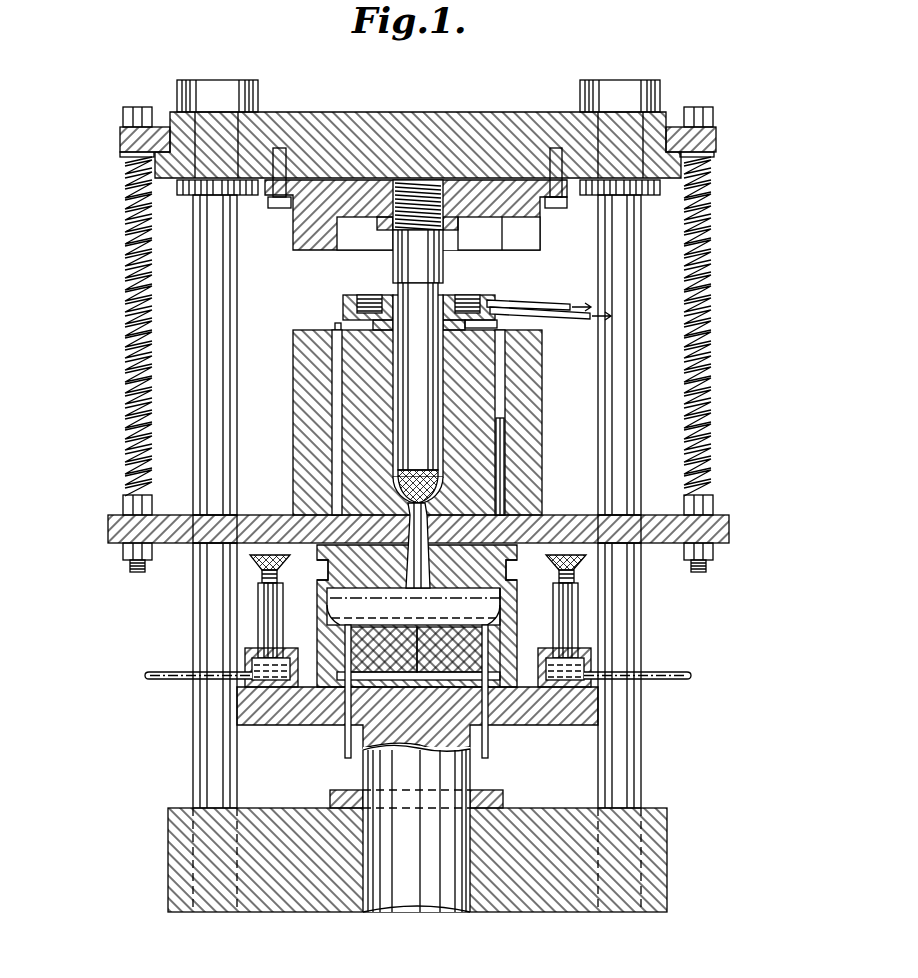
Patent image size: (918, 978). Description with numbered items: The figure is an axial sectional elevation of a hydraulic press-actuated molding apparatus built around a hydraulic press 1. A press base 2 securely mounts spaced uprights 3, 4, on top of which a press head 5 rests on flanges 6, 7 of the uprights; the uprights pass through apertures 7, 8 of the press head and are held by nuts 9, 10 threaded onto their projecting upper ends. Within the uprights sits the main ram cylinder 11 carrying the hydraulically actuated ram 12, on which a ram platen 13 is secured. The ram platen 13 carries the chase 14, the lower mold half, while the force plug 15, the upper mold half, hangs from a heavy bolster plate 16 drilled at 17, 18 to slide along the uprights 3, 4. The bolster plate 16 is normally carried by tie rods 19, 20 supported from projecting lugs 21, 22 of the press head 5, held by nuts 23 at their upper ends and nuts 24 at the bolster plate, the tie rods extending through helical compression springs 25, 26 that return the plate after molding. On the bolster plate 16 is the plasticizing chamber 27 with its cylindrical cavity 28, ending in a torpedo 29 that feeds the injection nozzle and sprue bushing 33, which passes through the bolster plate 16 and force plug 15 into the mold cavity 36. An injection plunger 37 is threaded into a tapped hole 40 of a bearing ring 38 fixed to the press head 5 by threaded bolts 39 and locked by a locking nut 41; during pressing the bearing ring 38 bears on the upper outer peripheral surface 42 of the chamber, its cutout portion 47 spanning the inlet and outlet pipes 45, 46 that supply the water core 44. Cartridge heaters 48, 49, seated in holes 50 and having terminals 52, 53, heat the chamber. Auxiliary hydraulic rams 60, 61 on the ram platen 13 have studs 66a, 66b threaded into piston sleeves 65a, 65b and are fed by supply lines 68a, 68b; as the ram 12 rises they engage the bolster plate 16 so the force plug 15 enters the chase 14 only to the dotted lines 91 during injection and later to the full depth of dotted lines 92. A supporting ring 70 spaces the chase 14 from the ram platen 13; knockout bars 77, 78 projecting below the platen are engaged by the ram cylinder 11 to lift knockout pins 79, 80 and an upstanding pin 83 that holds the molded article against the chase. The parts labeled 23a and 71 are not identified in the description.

The hydraulic press 1 is at (420, 513).
The press base 2 is at (667, 840).
The upright 3 is at (641, 728).
The upright 4 is at (193, 712).
The press head 5 is at (358, 112).
The flange 6 is at (183, 196).
The flange 7 is at (235, 138).
The aperture 8 is at (640, 135).
The nut 9 is at (258, 94).
The nut 10 is at (580, 92).
The main ram cylinder 11 is at (503, 795).
The ram 12 is at (418, 905).
The ram platen 13 is at (530, 725).
The chase 14 is at (320, 626).
The force plug 15 is at (510, 568).
The bolster plate 16 is at (590, 516).
The drilled hole 17 is at (235, 520).
The drilled hole 18 is at (641, 518).
The tie rod 19 is at (135, 572).
The tie rod 20 is at (700, 572).
The lug 21 is at (120, 142).
The lug 22 is at (716, 142).
The nut 23 is at (125, 110).
The lower nuts 23a is at (125, 552).
The nut 24 is at (125, 500).
The helical compression spring 25 is at (125, 420).
The helical compression spring 26 is at (712, 382).
The plasticizing chamber 27 is at (293, 388).
The cylindrical cavity 28 is at (443, 296).
The torpedo 29 is at (412, 473).
The injection nozzle and sprue bushing 33 is at (430, 530).
The mold cavity 36 is at (501, 590).
The injection plunger 37 is at (396, 272).
The bearing ring 38 is at (295, 250).
The threaded bolts 39 is at (283, 208).
The drilled and tapped hole 40 is at (410, 182).
The locking nut 41 is at (388, 226).
The upper and outer peripheral surface 42 is at (295, 332).
The water core 44 is at (470, 298).
The inlet pipe 45 is at (575, 311).
The outlet pipe 46 is at (525, 301).
The cutout portion 47 is at (520, 238).
The cartridge heater 48 is at (505, 420).
The cartridge heater 49 is at (335, 340).
The hole 50 is at (505, 385).
The terminal 52 is at (500, 324).
The terminal 53 is at (338, 323).
The auxiliary hydraulic ram 60 is at (572, 625).
The auxiliary hydraulic ram 61 is at (283, 605).
The piston sleeve 65a is at (578, 600).
The piston sleeve 65b is at (258, 598).
The stud 66a is at (586, 578).
The stud 66b is at (262, 578).
The supply line 68a is at (691, 677).
The supply line 68b is at (150, 673).
The supporting ring 70 is at (540, 670).
The left ejector base 71 is at (298, 684).
The knockout bar 77 is at (348, 758).
The knockout bar 78 is at (487, 758).
The knockout pin 79 is at (347, 645).
The knockout pin 80 is at (490, 640).
The upstanding pin 83 is at (505, 612).
The dotted lines 91 is at (318, 568).
The dotted lines 92 is at (433, 628).